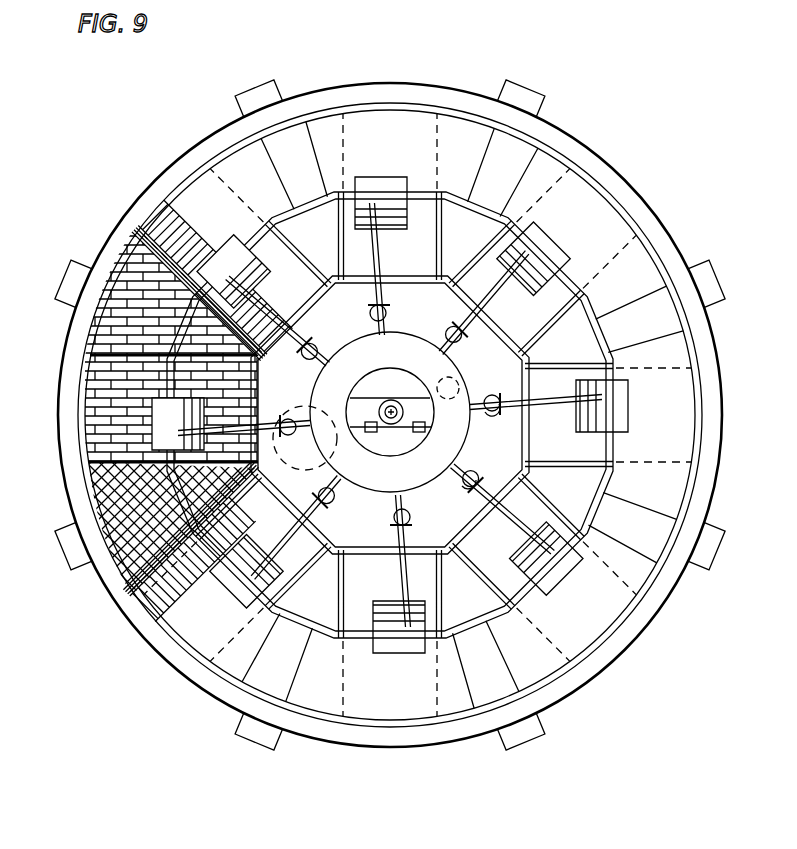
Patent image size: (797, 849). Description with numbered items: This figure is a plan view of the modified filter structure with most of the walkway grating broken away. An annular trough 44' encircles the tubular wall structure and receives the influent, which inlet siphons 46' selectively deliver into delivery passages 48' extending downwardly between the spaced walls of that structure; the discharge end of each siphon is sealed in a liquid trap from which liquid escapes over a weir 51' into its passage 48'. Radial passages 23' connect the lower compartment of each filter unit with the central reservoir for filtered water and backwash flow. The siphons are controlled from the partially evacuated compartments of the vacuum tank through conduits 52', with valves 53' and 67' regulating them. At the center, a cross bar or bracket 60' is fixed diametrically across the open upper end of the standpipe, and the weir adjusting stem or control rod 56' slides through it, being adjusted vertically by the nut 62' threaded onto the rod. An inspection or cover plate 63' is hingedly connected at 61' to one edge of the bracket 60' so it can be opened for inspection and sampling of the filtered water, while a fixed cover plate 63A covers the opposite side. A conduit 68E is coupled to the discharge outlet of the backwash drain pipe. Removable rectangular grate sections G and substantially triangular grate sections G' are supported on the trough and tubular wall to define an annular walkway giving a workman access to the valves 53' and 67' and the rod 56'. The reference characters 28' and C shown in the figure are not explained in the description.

The mounting lug 28' is at (412, 415).
The annular trough or manifold 44' is at (390, 415).
The radial passage 23' is at (417, 415).
The inlet siphon 46' is at (397, 407).
The conduit 52' is at (424, 389).
The weir 51' is at (404, 415).
The delivery passage or conduit 48' is at (425, 415).
The siphon control valve 67' is at (392, 408).
The inspection or cover plate 63' is at (390, 430).
The siphon control valve 53' is at (462, 471).
The cross bar or bracket 60' is at (390, 412).
The fixed cover plate 63A is at (378, 378).
The hinge connection 61' is at (391, 437).
The nut 62' is at (400, 383).
The weir adjusting stem or control rod 56' is at (416, 388).
The center axis C is at (388, 462).
The conduit 68E is at (328, 458).
The removable grate section G is at (131, 421).
The removable grate section G' is at (141, 529).